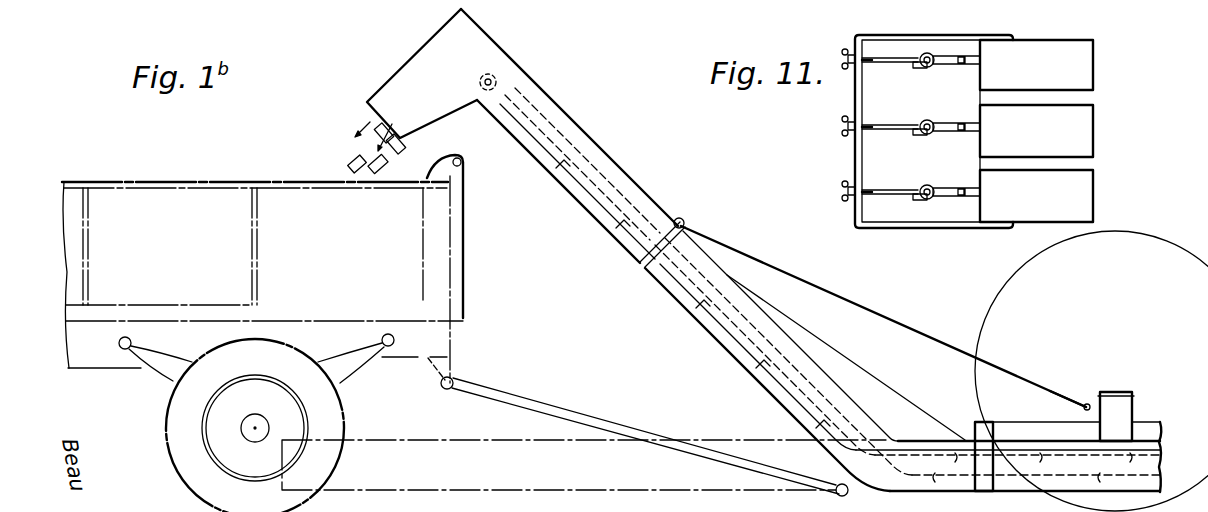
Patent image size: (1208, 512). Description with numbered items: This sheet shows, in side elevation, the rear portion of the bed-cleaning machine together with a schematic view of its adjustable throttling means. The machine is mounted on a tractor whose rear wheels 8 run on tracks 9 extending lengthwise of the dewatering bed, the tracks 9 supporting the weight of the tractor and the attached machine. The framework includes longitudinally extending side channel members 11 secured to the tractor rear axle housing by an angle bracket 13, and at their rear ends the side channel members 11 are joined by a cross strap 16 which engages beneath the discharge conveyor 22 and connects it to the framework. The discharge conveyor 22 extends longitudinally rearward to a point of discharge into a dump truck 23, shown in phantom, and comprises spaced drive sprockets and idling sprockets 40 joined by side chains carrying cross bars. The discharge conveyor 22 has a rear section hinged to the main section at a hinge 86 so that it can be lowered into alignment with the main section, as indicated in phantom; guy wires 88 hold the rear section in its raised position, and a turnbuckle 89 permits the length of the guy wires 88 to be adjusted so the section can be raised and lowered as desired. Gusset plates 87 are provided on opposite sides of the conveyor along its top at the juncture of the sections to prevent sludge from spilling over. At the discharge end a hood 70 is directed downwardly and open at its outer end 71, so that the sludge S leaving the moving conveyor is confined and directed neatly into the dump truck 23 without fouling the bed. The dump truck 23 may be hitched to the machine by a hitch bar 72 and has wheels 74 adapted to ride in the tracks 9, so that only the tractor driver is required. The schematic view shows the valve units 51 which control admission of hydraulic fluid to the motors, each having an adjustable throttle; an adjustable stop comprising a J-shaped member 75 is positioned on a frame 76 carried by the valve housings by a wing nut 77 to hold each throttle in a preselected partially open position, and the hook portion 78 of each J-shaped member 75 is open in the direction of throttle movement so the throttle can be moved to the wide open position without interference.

In FIG. 1B, the dump truck 23 is at (201, 181).
In FIG. 1B, the wheels 74 is at (342, 415).
In FIG. 1B, the hitch bar 72 is at (520, 398).
In FIG. 1B, the tracks 9 is at (372, 511).
In FIG. 1B, the hood 70 is at (396, 80).
In FIG. 1B, the outer end 71 is at (366, 104).
In FIG. 1B, the sludge S is at (380, 134).
In FIG. 1B, the idling sprockets 40 is at (497, 79).
In FIG. 1B, the hinge 86 is at (878, 442).
In FIG. 1B, the gusset plates 87 is at (866, 390).
In FIG. 1B, the guy wires 88 is at (918, 328).
In FIG. 1B, the turnbuckle 89 is at (1087, 402).
In FIG. 1B, the discharge conveyor 22 is at (1158, 446).
In FIG. 1B, the cross strap 16 is at (975, 425).
In FIG. 1B, the angle bracket 13 is at (1132, 394).
In FIG. 1B, the side channel members 11 is at (1145, 424).
In FIG. 1B, the rear wheels 8 is at (988, 311).
In FIG. 11, the frame 76 is at (862, 163).
In FIG. 11, the valve units 51 is at (1116, 122).
In FIG. 11, the J-shaped member 75 is at (885, 123).
In FIG. 11, the hook portion 78 is at (926, 121).
In FIG. 11, the wing nut 77 is at (843, 124).